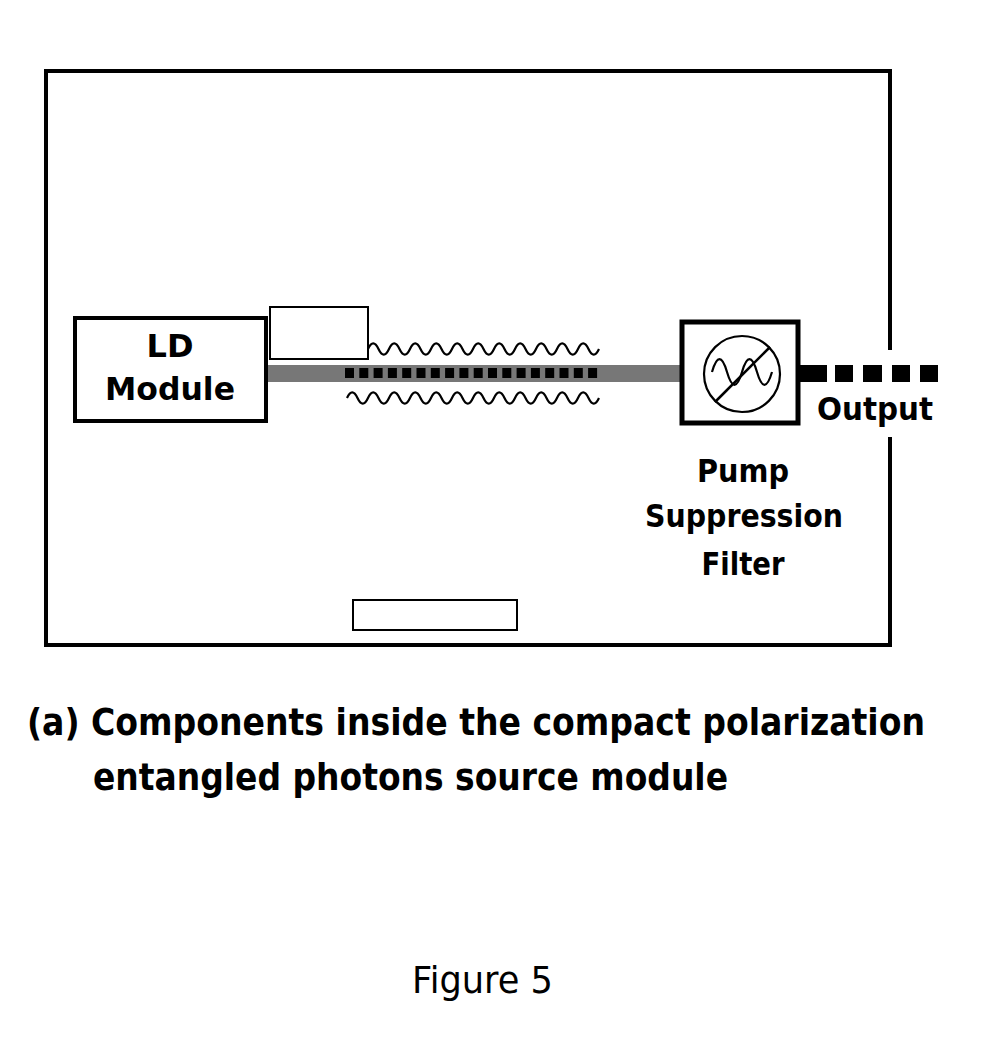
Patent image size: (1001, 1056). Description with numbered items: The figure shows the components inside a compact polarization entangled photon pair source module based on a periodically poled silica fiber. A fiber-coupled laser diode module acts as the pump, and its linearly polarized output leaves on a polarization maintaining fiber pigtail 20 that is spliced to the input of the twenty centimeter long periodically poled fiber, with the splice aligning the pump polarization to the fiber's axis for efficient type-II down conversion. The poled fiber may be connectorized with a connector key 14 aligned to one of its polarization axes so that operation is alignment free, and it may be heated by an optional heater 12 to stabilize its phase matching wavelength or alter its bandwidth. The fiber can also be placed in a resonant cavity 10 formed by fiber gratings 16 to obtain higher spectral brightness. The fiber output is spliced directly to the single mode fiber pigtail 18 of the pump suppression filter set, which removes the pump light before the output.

The resonant cavity 10 is at (423, 400).
The optional heater 12 is at (353, 617).
The connector key 14 is at (338, 305).
The fiber gratings 16 is at (460, 342).
The single mode fiber pigtail 18 is at (612, 365).
The polarization maintaining fiber pigtail 20 is at (343, 383).